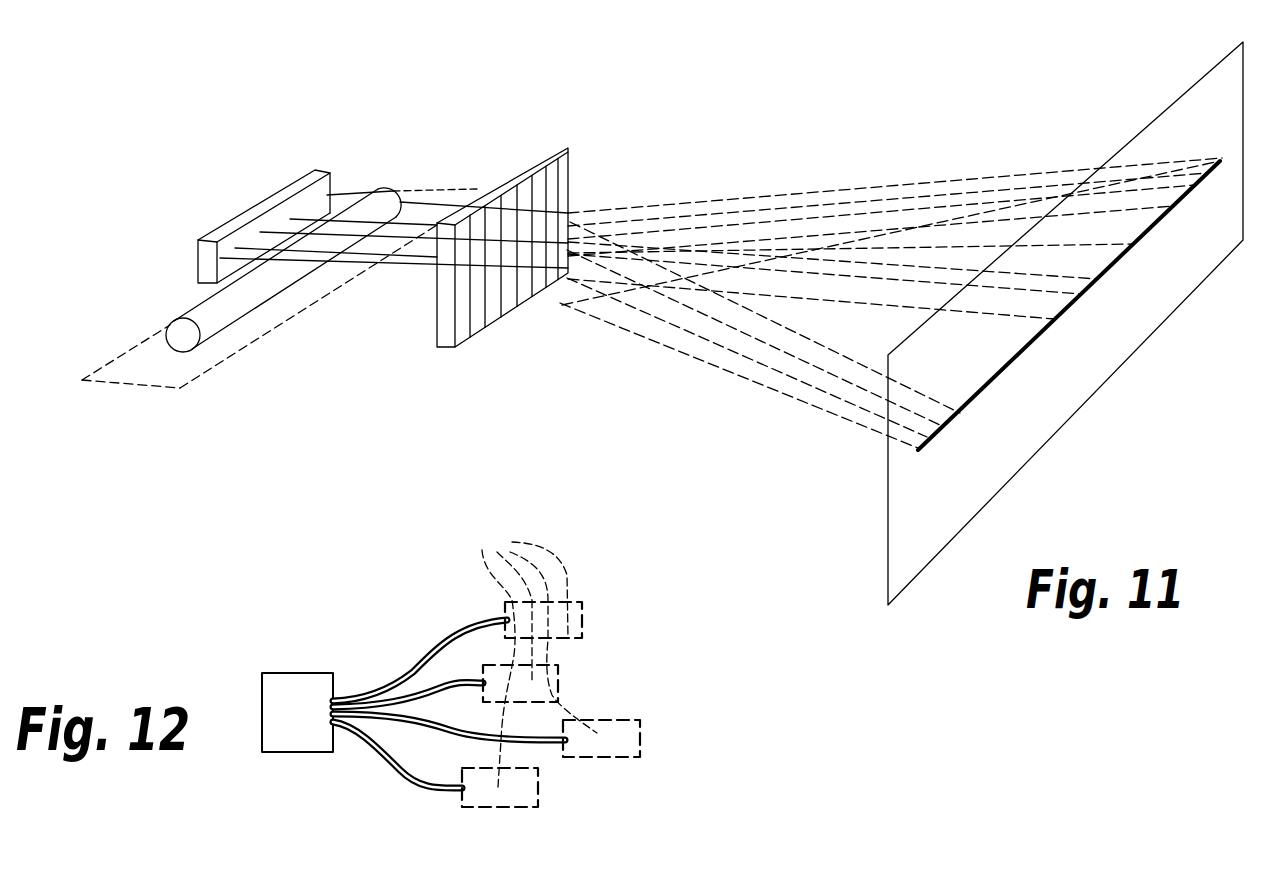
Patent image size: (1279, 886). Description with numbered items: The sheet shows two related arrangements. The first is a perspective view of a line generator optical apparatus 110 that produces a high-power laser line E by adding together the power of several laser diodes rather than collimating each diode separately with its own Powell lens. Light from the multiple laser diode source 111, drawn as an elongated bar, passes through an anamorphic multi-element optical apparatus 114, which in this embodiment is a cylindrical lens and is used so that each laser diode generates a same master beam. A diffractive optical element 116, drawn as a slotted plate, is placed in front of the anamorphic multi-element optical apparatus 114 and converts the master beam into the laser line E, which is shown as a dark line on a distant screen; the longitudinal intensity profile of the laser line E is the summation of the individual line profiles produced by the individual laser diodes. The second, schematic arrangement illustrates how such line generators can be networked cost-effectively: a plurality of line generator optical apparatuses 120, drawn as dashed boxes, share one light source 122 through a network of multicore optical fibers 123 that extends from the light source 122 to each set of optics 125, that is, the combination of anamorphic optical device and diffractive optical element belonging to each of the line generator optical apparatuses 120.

In FIG. 11, the line generator optical apparatus 110 is at (555, 360).
In FIG. 11, the multiple laser diode source 111 is at (267, 200).
In FIG. 11, the anamorphic multi-element optical apparatus 114 is at (119, 355).
In FIG. 11, the diffractive optical element 116 is at (537, 160).
In FIG. 11, the laser line E is at (1033, 343).
In FIG. 12, the line generator optical apparatuses 120 is at (565, 682).
In FIG. 12, the light source 122 is at (293, 730).
In FIG. 12, the multicore optical fibers 123 is at (388, 747).
In FIG. 12, the set of optics 125 is at (533, 654).